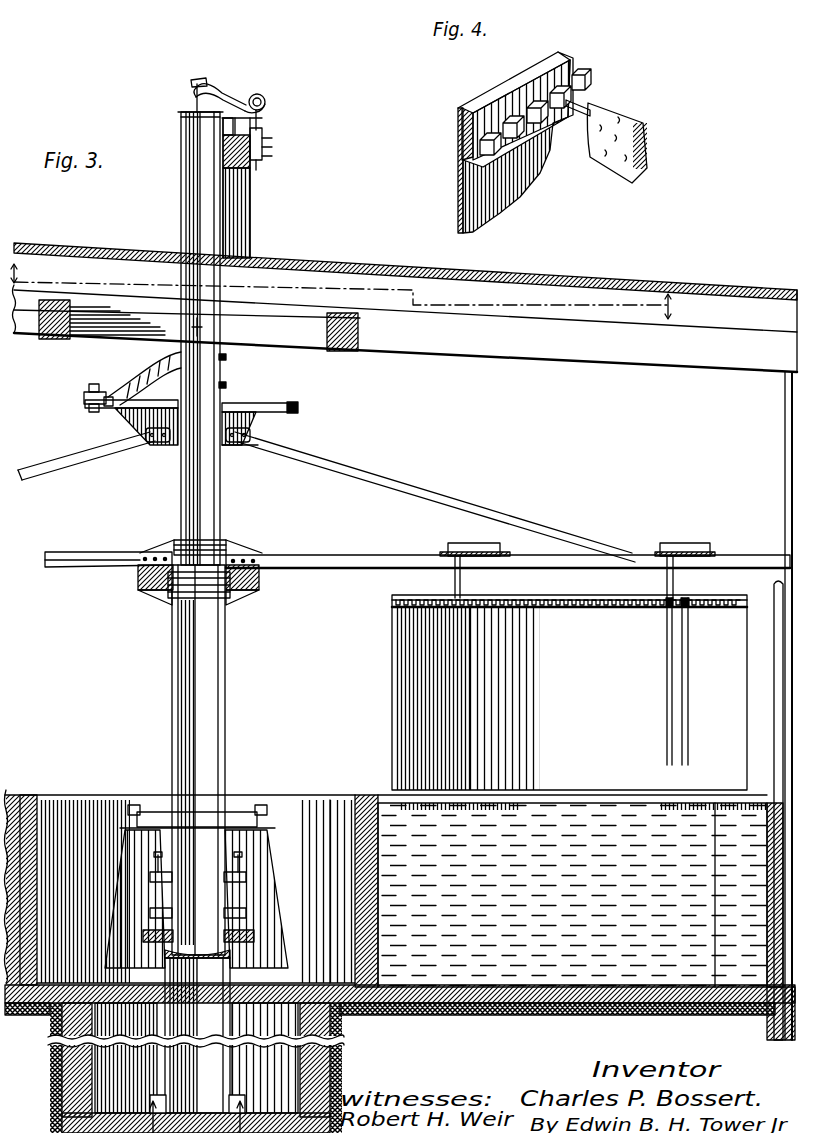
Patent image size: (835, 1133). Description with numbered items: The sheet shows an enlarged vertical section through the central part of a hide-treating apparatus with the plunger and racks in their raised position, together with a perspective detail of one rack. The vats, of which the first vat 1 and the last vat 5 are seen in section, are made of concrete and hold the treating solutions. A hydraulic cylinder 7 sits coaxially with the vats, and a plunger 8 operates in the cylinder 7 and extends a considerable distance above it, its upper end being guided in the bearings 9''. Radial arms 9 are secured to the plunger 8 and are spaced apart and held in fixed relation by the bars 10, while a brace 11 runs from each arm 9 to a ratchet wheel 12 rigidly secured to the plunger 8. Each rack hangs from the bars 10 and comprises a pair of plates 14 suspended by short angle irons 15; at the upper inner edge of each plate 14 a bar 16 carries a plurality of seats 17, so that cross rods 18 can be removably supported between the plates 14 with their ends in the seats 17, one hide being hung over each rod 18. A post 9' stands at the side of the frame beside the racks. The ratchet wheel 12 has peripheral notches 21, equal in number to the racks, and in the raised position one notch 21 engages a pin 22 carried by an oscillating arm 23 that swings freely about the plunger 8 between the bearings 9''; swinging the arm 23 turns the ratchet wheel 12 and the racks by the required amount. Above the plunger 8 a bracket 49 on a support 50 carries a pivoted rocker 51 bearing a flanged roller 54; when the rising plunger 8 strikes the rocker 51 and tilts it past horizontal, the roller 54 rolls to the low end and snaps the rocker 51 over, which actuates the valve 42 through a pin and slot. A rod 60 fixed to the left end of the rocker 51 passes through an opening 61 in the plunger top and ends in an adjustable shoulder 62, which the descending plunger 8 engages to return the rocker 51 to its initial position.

In FIG. 3, the vat 1 is at (14, 795).
In FIG. 3, the vat 5 is at (747, 822).
In FIG. 3, the hydraulic cylinder 7 is at (232, 1023).
In FIG. 3, the plunger 8 is at (222, 503).
In FIG. 3, the radial arm 9 is at (417, 559).
In FIG. 3, the post 9' is at (766, 810).
In FIG. 3, the bearing 9'' is at (237, 373).
In FIG. 3, the bar 10 is at (485, 545).
In FIG. 3, the brace 11 is at (545, 528).
In FIG. 3, the ratchet wheel 12 is at (262, 419).
In FIG. 3, the plate 14 is at (392, 758).
In FIG. 4, the plate 14 is at (458, 184).
In FIG. 3, the angle iron 15 is at (453, 580).
In FIG. 3, the bar 16 is at (546, 607).
In FIG. 4, the bar 16 is at (460, 118).
In FIG. 3, the seat 17 is at (600, 604).
In FIG. 4, the seat 17 is at (543, 78).
In FIG. 3, the cross rod 18 is at (668, 606).
In FIG. 4, the cross rod 18 is at (590, 106).
In FIG. 3, the peripheral notch 21 is at (294, 403).
In FIG. 3, the pin 22 is at (110, 410).
In FIG. 3, the oscillating arm 23 is at (162, 384).
In FIG. 3, the valve 42 is at (263, 141).
In FIG. 3, the bracket 49 is at (250, 130).
In FIG. 3, the support 50 is at (248, 176).
In FIG. 3, the rocker 51 is at (216, 92).
In FIG. 3, the flanged roller 54 is at (258, 94).
In FIG. 3, the rod 60 is at (197, 186).
In FIG. 3, the opening 61 is at (194, 106).
In FIG. 3, the adjustable shoulder 62 is at (205, 326).